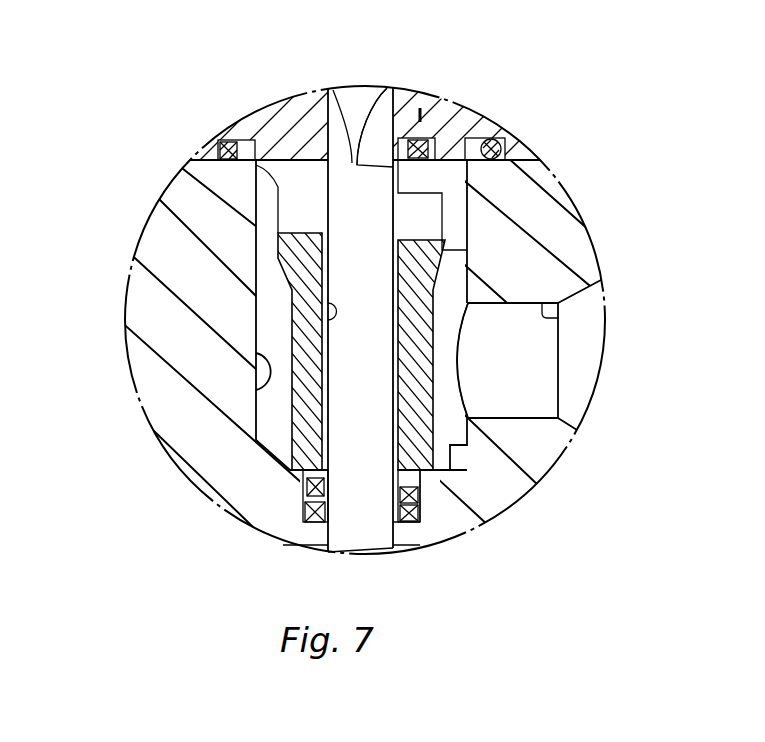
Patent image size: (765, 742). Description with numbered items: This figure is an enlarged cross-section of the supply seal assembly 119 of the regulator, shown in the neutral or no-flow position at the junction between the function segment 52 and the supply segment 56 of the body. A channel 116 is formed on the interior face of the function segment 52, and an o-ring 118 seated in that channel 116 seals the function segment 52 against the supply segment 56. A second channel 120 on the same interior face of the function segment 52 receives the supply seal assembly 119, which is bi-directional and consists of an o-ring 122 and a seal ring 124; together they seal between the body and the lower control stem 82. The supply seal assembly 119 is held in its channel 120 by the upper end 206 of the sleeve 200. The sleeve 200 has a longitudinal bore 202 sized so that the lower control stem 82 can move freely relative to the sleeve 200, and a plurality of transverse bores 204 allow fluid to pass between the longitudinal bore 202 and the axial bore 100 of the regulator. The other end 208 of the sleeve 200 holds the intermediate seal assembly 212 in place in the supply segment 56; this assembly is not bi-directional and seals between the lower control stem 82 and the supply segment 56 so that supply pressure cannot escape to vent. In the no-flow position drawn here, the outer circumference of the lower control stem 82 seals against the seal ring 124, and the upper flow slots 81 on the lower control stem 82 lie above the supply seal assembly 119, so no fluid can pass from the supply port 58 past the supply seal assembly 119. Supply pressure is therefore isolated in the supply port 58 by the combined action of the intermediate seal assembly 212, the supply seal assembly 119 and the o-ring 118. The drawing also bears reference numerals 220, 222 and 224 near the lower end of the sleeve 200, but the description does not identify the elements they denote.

The function segment 52 is at (298, 105).
The supply segment 56 is at (540, 200).
The supply port 58 is at (558, 315).
The upper flow slots 81 is at (383, 95).
The lower control stem 82 is at (370, 508).
The axial bore 100 is at (255, 397).
The channel 116 is at (492, 135).
The o-ring 118 is at (518, 148).
The supply seal assembly 119 is at (421, 124).
The channel 120 is at (234, 133).
The o-ring 122 is at (220, 145).
The seal ring 124 is at (258, 182).
The sleeve 200 is at (300, 420).
The longitudinal bore 202 is at (353, 160).
The transverse bores 204 is at (250, 234).
The upper end 206 is at (230, 162).
The other end 208 is at (428, 432).
The intermediate seal assembly 212 is at (296, 503).
The bearing ring 220 is at (440, 480).
The seal ring 222 is at (440, 502).
The retainer 224 is at (426, 512).